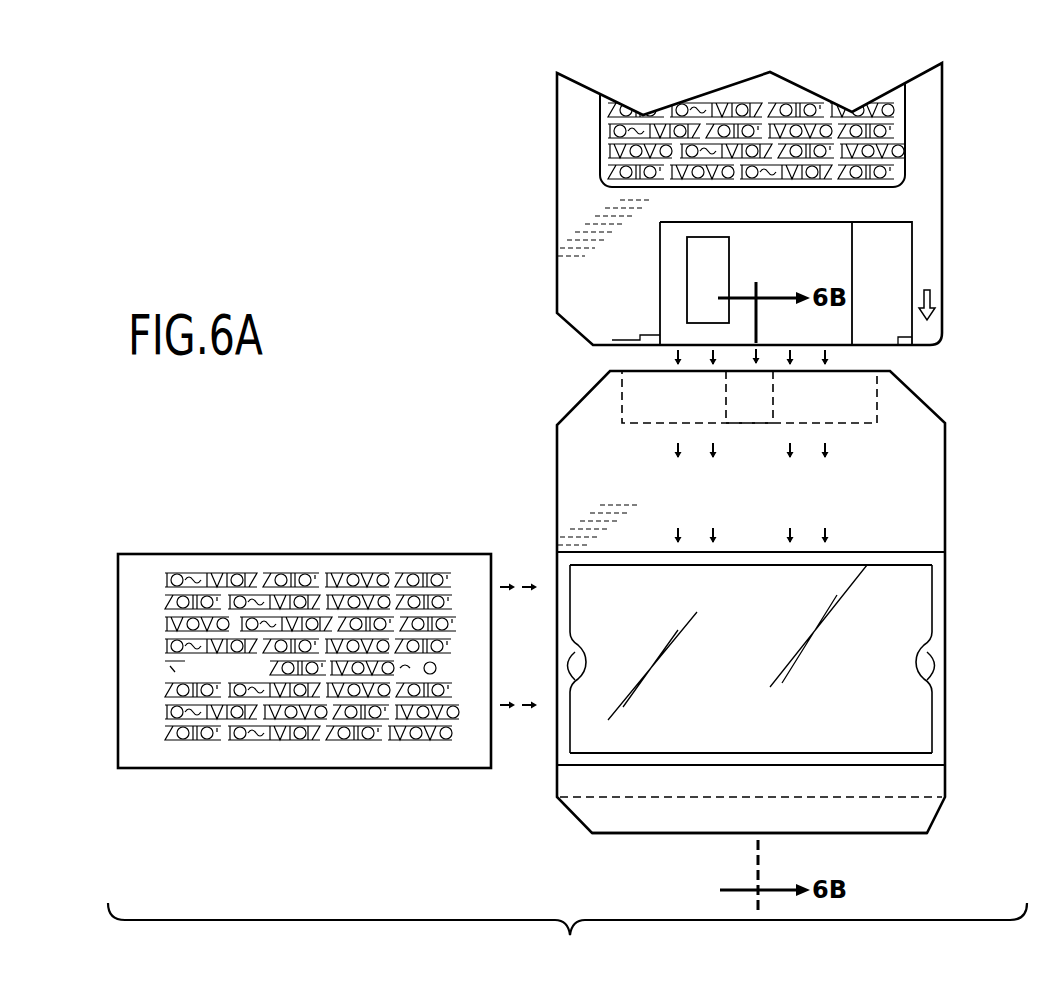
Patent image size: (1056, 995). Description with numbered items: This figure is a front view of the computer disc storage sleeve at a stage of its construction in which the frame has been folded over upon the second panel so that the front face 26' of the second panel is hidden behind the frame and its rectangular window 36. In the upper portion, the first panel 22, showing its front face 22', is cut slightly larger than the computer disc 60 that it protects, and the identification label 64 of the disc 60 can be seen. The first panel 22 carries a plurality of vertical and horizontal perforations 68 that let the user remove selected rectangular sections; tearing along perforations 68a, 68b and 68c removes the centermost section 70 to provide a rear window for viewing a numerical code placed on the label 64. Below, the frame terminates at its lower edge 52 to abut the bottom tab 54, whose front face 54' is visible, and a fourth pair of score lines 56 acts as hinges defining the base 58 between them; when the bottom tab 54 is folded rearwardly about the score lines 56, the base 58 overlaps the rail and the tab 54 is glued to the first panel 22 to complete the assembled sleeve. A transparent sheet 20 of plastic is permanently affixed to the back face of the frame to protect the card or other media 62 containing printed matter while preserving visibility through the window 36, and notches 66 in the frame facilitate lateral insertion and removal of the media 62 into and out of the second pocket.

The computer disc 60 is at (593, 289).
The identification label 64 is at (694, 114).
The first panel 22 is at (719, 602).
The front face of first panel 22' is at (899, 487).
The perforations 68 is at (636, 420).
The perforation 68a is at (732, 398).
The perforation 68b is at (733, 425).
The perforation 68c is at (773, 398).
The centermost section 70 is at (755, 413).
The transparent sheet 20 is at (652, 575).
The window 36 is at (756, 620).
The lower edge of frame 52 is at (678, 752).
The base 58 is at (758, 782).
The score lines 56 is at (842, 743).
The bottom tab 54 is at (676, 872).
The front face of bottom tab 54' is at (811, 847).
The front face of second panel 26' is at (765, 642).
The notch 66 is at (560, 670).
The card or other media 62 is at (306, 578).